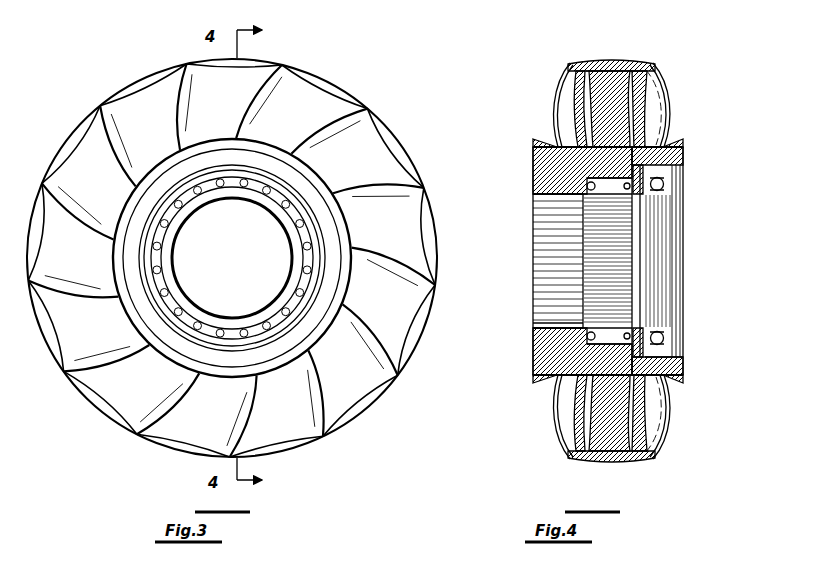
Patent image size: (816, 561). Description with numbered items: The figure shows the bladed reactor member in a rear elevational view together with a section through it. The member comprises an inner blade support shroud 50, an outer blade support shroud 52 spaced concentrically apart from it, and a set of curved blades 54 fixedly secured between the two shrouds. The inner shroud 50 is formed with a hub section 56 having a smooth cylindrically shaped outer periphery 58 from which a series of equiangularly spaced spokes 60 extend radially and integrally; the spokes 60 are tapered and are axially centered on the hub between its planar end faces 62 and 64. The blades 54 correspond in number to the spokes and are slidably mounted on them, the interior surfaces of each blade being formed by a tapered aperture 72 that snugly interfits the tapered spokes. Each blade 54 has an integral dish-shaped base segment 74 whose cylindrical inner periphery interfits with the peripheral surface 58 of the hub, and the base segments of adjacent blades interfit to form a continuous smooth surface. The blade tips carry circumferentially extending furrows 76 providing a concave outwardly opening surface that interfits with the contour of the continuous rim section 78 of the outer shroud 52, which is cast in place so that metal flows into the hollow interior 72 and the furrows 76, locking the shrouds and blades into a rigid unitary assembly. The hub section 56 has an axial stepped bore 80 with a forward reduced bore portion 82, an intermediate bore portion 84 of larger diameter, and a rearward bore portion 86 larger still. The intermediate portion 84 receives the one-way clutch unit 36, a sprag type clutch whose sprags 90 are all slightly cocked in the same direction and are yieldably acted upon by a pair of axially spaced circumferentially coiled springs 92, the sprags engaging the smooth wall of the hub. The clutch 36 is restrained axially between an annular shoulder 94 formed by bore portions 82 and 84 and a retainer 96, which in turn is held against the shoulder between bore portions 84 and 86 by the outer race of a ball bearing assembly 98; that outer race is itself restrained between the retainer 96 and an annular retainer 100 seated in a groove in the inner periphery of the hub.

In FIG. 4, the one-way clutch unit 36 is at (614, 320).
In FIG. 3, the inner blade support shroud 50 is at (263, 150).
In FIG. 3, the outer blade support shroud 52 is at (316, 70).
In FIG. 4, the outer blade support shroud 52 is at (645, 57).
In FIG. 3, the curved blades 54 is at (366, 142).
In FIG. 4, the curved blades 54 is at (665, 93).
In FIG. 4, the hub section 56 is at (543, 178).
In FIG. 4, the outer periphery 58 is at (550, 145).
In FIG. 4, the spokes 60 is at (622, 126).
In FIG. 4, the planar end face 62 is at (533, 165).
In FIG. 3, the planar end face 64 is at (152, 305).
In FIG. 4, the planar end face 64 is at (673, 357).
In FIG. 4, the aperture 72 is at (590, 93).
In FIG. 3, the dish-shaped base segment 74 is at (220, 377).
In FIG. 4, the dish-shaped base segment 74 is at (677, 143).
In FIG. 4, the furrows 76 is at (592, 63).
In FIG. 4, the rim section 78 is at (617, 63).
In FIG. 3, the axial stepped bore 80 is at (244, 280).
In FIG. 4, the axial stepped bore 80 is at (555, 223).
In FIG. 4, the forward reduced bore portion 82 is at (533, 323).
In FIG. 4, the intermediate bore portion 84 is at (637, 322).
In FIG. 4, the rearward bore portion 86 is at (667, 337).
In FIG. 3, the sprags 90 is at (302, 247).
In FIG. 4, the sprags 90 is at (597, 194).
In FIG. 4, the circumferentially coiled springs 92 is at (600, 183).
In FIG. 4, the annular shoulder 94 is at (590, 326).
In FIG. 4, the retainer 96 is at (623, 182).
In FIG. 4, the ball bearing assembly 98 is at (667, 183).
In FIG. 3, the annular retainer 100 is at (167, 187).
In FIG. 4, the annular retainer 100 is at (680, 175).